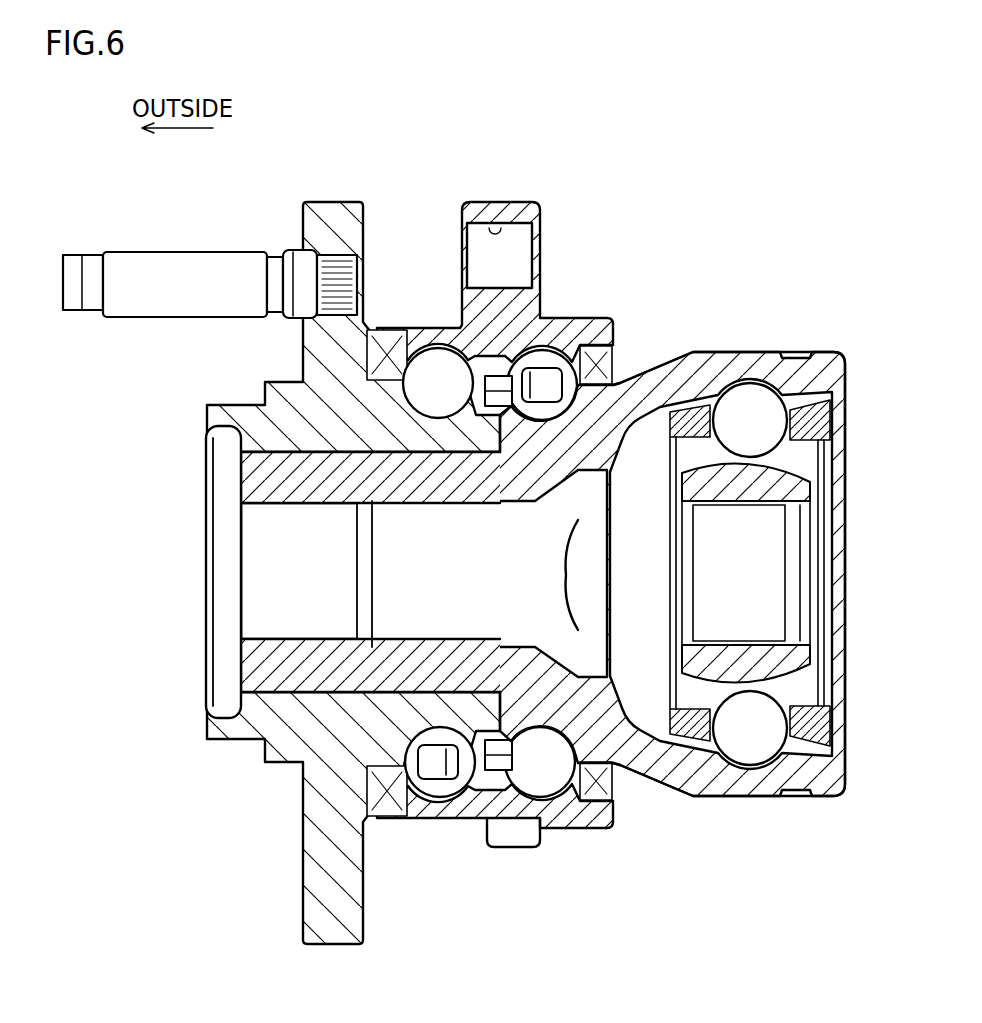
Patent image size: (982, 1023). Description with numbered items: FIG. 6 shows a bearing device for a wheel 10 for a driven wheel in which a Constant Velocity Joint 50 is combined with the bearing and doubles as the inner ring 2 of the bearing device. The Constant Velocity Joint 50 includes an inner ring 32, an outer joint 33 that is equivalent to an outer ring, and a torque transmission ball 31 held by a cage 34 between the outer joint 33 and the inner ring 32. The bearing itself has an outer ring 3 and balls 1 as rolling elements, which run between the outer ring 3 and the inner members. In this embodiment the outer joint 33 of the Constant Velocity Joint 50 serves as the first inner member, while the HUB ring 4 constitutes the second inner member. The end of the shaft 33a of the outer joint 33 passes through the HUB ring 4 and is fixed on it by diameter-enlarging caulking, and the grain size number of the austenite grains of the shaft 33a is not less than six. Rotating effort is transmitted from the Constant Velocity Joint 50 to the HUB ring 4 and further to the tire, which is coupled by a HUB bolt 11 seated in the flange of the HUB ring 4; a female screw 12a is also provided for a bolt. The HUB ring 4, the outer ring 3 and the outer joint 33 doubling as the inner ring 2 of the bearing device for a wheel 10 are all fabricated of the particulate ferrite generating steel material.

The ball 1 is at (540, 362).
The inner ring 2 is at (729, 574).
The outer ring 3 is at (495, 501).
The HUB ring 4 is at (330, 407).
The bearing device for a wheel 10 is at (443, 171).
The HUB bolt 11 is at (180, 272).
The female screw 12a is at (495, 228).
The ball of Constant Velocity Joint 31 is at (748, 407).
The inner ring of Constant Velocity Joint 32 is at (785, 482).
The outer joint of Constant Velocity Joint 33 is at (494, 542).
The shaft of Constant Velocity Joint 33a is at (272, 486).
The cage of Constant Velocity Joint 34 is at (694, 413).
The Constant Velocity Joint 50 is at (729, 184).